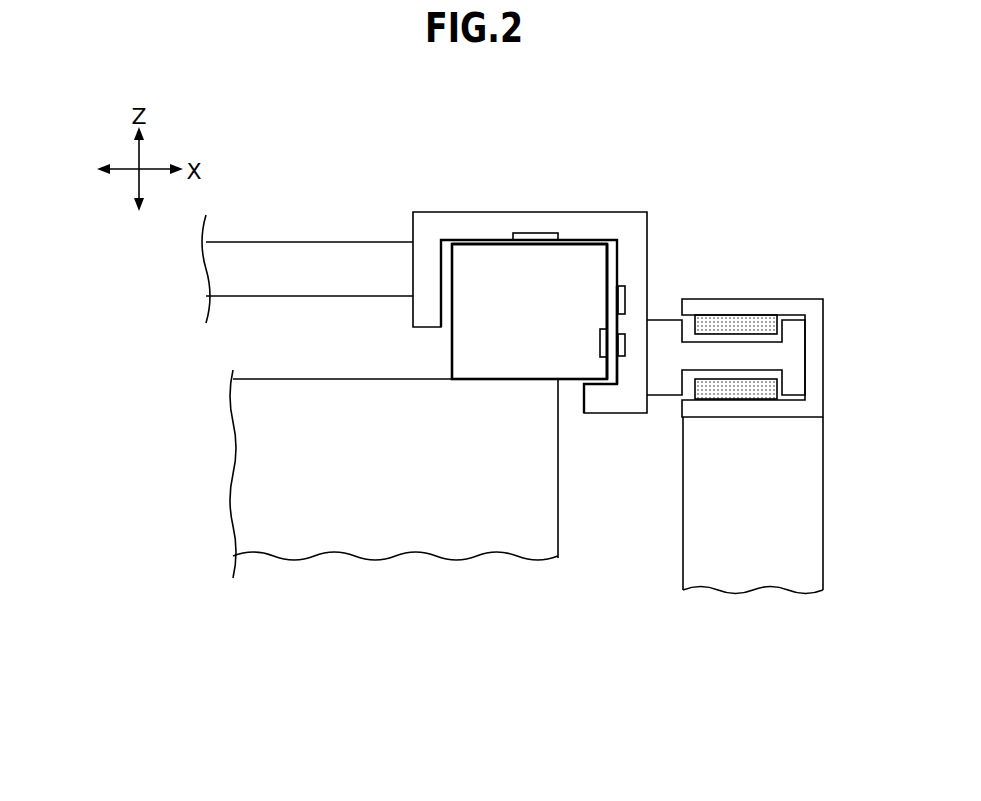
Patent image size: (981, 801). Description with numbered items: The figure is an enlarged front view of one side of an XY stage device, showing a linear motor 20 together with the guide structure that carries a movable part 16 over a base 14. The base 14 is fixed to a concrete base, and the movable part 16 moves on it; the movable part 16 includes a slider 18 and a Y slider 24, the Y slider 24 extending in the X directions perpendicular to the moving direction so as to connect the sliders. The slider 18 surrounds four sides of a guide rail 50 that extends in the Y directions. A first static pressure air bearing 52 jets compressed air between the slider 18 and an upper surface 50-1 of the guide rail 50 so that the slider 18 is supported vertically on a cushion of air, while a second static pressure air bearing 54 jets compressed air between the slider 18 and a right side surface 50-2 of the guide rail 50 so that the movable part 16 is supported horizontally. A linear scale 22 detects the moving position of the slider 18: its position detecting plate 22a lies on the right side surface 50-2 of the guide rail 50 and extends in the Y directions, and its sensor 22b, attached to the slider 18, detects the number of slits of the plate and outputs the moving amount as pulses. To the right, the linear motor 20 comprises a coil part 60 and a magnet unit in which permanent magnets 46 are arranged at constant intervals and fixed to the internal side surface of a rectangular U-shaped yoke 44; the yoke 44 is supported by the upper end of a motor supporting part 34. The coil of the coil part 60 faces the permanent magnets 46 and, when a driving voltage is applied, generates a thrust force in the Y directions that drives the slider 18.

The base 14 is at (542, 537).
The movable part 16 is at (366, 208).
The slider 18 is at (587, 212).
The linear motor 20 is at (845, 303).
The linear scale 22 is at (641, 306).
The position detecting plate 22a is at (600, 343).
The sensor 22b is at (628, 370).
The Y slider 24 is at (309, 265).
The motor supporting part 34 is at (813, 490).
The yoke 44 is at (808, 298).
The permanent magnet 46 is at (757, 325).
The guide rail 50 is at (441, 351).
The upper surface of the guide rail 50-1 is at (486, 243).
The right side surface of the guide rail 50-2 is at (608, 258).
The first static pressure air bearing 52 is at (533, 233).
The second static pressure air bearing 54 is at (626, 300).
The coil part 60 is at (661, 380).